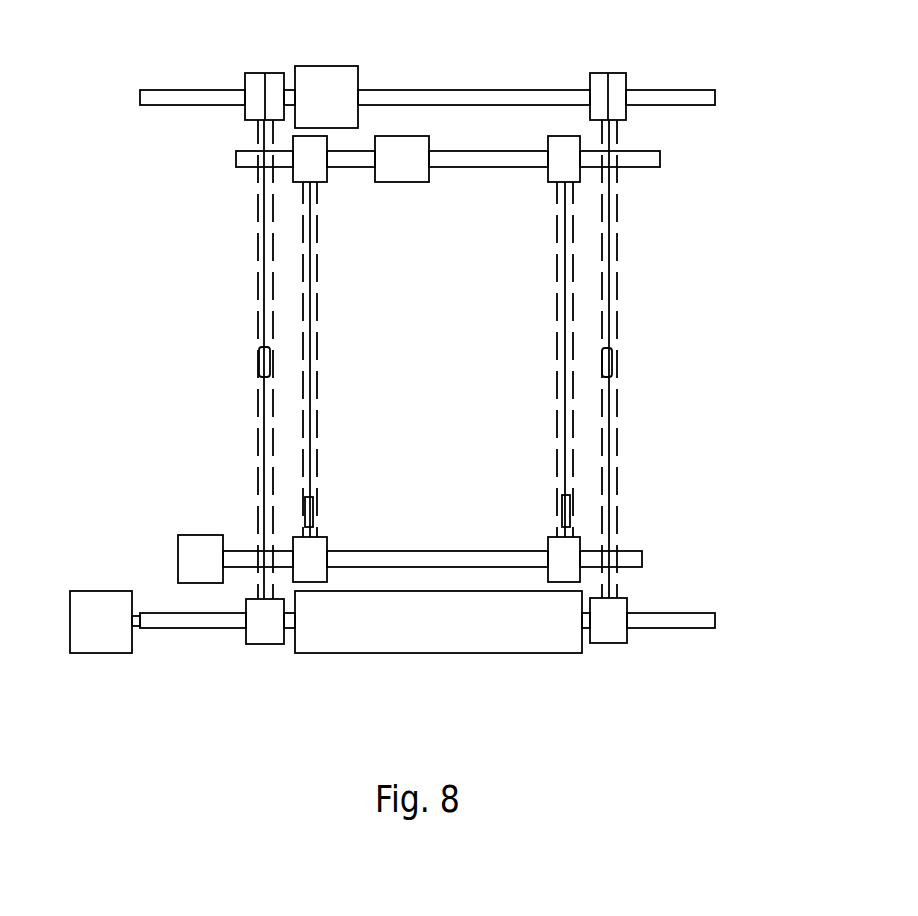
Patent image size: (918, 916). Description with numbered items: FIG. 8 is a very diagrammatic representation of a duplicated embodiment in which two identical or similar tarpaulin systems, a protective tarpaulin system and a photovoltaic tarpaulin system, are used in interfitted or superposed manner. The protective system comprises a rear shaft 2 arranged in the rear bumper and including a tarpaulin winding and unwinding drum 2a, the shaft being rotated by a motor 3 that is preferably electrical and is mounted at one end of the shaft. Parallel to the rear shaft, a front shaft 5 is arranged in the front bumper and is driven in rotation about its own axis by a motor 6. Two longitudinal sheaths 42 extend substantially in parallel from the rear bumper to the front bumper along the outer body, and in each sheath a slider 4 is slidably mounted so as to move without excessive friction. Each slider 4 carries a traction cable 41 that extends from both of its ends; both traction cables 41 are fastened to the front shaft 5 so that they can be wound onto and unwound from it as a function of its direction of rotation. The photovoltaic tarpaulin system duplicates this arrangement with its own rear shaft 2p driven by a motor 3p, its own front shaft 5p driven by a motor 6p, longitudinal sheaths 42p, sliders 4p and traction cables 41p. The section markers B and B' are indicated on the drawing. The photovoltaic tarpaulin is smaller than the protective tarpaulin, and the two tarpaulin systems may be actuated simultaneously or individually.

The rear shaft 2 is at (663, 640).
The tarpaulin winding and unwinding drum 2a is at (458, 638).
The rear shaft of the photovoltaic tarpaulin system 2p is at (632, 540).
The motor 3 is at (93, 640).
The motor of the photovoltaic tarpaulin system 3p is at (193, 562).
The slider 4 is at (258, 362).
The slider of the photovoltaic tarpaulin system 4p is at (305, 507).
The traction cable 41 is at (263, 442).
The traction cable of the photovoltaic tarpaulin system 41p is at (310, 382).
The longitudinal sheath 42 is at (257, 217).
The longitudinal sheath of the photovoltaic tarpaulin system 42p is at (302, 277).
The front shaft 5 is at (679, 85).
The front shaft of the photovoltaic tarpaulin system 5p is at (645, 172).
The motor 6 is at (335, 80).
The motor of the photovoltaic tarpaulin system 6p is at (413, 147).
The section line B is at (771, 141).
The section line B' is at (715, 553).